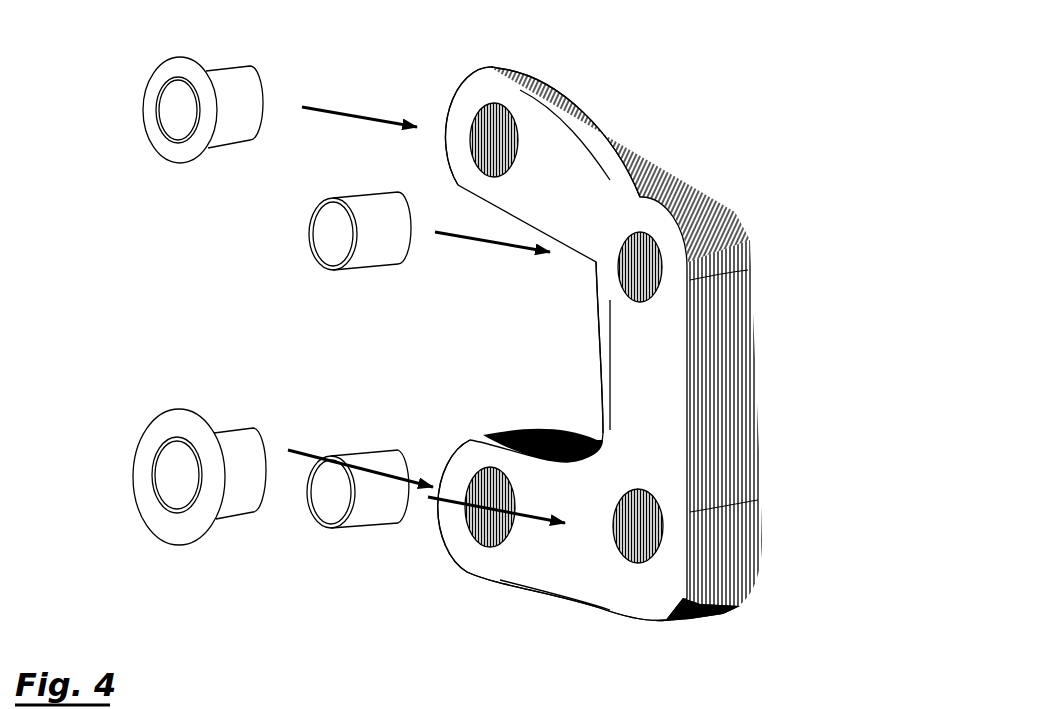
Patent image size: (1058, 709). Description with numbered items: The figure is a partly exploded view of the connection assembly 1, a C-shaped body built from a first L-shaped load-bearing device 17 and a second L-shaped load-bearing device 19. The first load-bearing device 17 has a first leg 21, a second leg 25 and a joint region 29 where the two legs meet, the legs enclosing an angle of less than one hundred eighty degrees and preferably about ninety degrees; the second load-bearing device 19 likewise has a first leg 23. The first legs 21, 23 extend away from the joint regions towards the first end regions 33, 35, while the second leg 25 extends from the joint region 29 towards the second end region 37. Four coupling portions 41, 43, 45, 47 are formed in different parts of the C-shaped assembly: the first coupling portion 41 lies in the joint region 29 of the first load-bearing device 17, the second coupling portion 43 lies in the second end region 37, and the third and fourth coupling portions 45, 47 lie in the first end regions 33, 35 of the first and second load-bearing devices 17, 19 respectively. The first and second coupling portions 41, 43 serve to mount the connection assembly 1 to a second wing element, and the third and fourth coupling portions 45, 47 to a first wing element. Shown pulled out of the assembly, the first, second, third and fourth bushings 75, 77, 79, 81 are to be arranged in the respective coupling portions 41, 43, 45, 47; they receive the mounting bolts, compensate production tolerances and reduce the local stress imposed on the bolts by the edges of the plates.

The connection assembly 1 is at (773, 101).
The first load-bearing device 17 is at (576, 607).
The second load-bearing device 19 is at (630, 112).
The first leg 21 is at (548, 567).
The first leg 23 is at (552, 142).
The second leg 25 is at (660, 377).
The joint region 29 is at (670, 597).
The first end region 33 is at (463, 540).
The first end region 35 is at (472, 88).
The second end region 37 is at (607, 262).
The first coupling portion 41 is at (667, 537).
The second coupling portion 43 is at (660, 268).
The third coupling portion 45 is at (482, 467).
The fourth coupling portion 47 is at (493, 103).
The first bushing 75 is at (318, 513).
The second bushing 77 is at (372, 262).
The third bushing 79 is at (143, 470).
The fourth bushing 81 is at (168, 147).